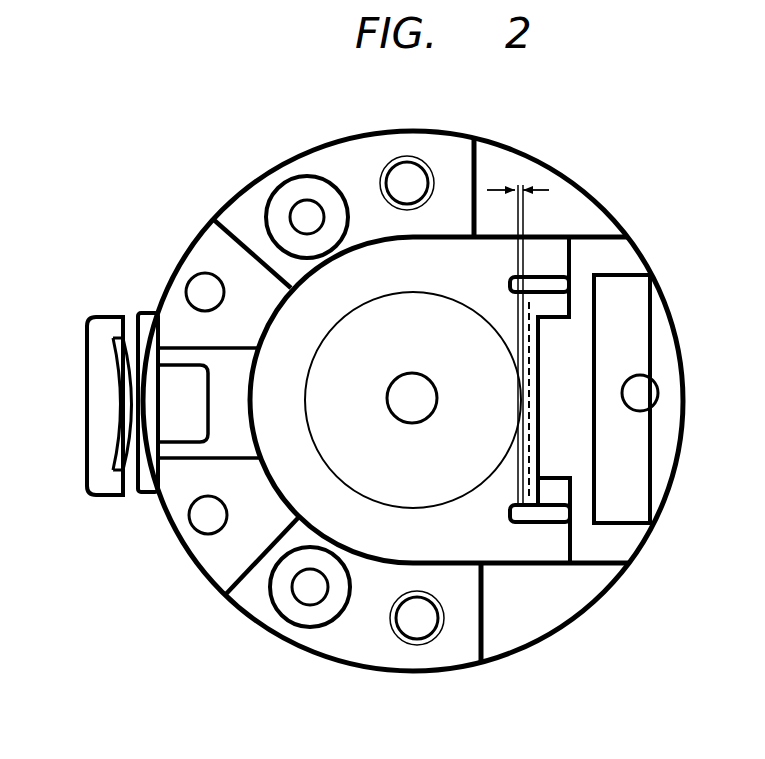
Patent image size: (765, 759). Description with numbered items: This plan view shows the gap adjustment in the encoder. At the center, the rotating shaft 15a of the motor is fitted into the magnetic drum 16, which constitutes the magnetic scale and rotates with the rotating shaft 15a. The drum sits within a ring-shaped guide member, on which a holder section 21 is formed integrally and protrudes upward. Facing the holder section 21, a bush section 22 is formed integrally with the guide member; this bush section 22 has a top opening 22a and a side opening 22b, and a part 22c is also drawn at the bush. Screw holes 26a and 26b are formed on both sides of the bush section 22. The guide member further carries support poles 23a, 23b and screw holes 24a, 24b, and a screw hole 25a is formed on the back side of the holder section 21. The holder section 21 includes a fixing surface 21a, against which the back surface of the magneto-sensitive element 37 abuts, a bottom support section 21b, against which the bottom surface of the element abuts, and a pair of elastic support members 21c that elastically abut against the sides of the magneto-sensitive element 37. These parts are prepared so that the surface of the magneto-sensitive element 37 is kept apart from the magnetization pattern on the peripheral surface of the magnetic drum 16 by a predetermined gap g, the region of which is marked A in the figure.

The rotating shaft 15a is at (395, 387).
The magnetic drum 16 is at (445, 273).
The holder section 21 is at (558, 332).
The fixing surface 21a is at (543, 427).
The bottom support section 21b is at (560, 360).
The elastic support members 21c is at (532, 277).
The bush section 22 is at (103, 325).
The top opening 22a is at (177, 375).
The side opening 22b is at (88, 452).
The knob washer 22c is at (120, 388).
The support pole 23a is at (282, 183).
The support pole 23b is at (270, 600).
The screw hole 24a is at (407, 157).
The screw hole 24b is at (403, 643).
The screw hole 25a is at (653, 378).
The screw hole 26a is at (202, 277).
The screw hole 26b is at (193, 523).
The magneto-sensitive element 37 is at (543, 462).
The gap region A is at (518, 392).
The gap g is at (517, 185).